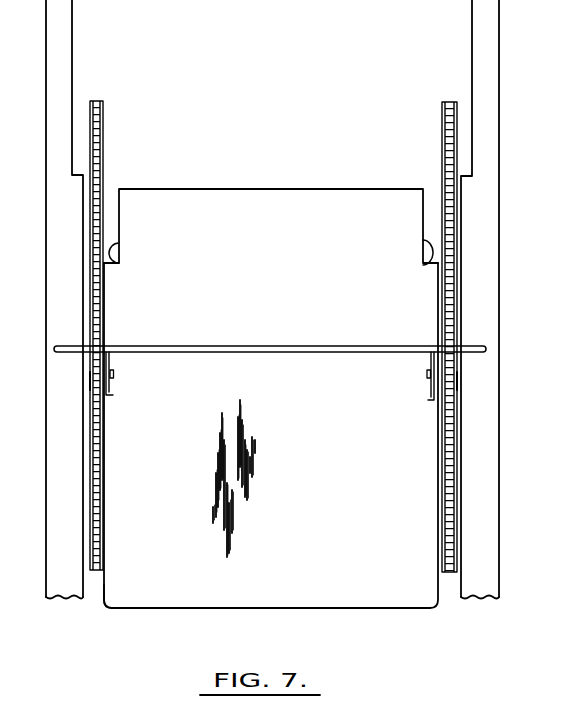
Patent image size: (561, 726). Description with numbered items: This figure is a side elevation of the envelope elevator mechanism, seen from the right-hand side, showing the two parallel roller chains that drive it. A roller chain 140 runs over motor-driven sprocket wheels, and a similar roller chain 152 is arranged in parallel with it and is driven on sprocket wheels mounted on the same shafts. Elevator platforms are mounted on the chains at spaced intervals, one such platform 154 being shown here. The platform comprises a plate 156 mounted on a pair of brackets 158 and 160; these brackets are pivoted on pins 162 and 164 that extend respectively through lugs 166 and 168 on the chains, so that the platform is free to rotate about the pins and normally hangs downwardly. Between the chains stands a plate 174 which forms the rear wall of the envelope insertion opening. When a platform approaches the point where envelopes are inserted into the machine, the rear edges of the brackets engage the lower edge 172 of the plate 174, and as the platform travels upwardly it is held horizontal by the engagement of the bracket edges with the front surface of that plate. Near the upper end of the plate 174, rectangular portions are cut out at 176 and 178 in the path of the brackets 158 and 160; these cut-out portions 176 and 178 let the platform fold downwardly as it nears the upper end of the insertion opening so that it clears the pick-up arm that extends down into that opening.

The roller chain 140 is at (450, 490).
The roller chain 152 is at (101, 465).
The elevator platform 154 is at (270, 320).
The plate 156 is at (203, 346).
The bracket 158 is at (113, 393).
The bracket 160 is at (433, 395).
The pin 162 is at (115, 374).
The pin 164 is at (427, 376).
The lug 166 is at (92, 381).
The lug 168 is at (444, 379).
The lower edge 172 is at (283, 609).
The plate 174 is at (182, 582).
The cut-out portion 176 is at (120, 264).
The cut-out portion 178 is at (421, 262).